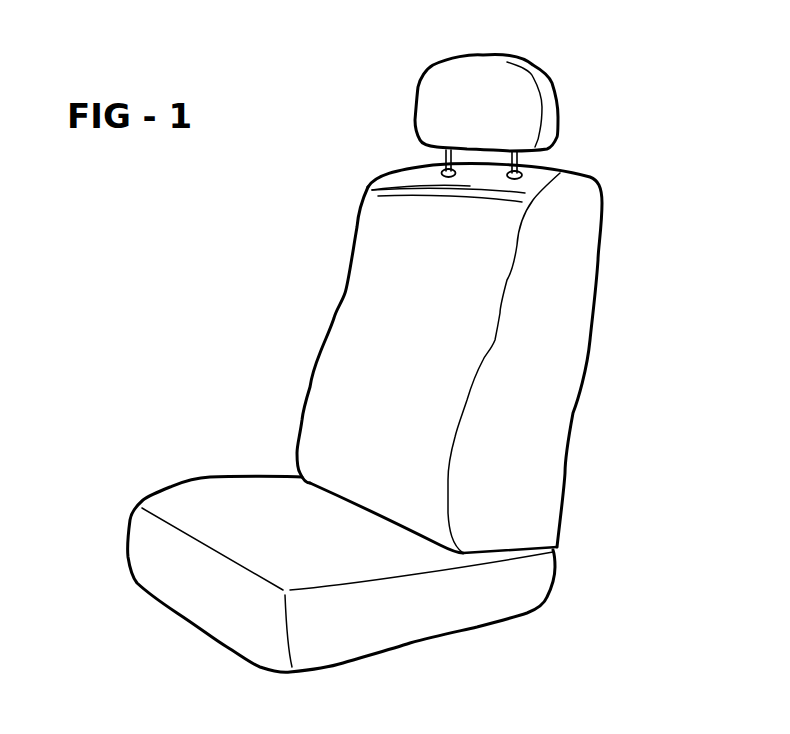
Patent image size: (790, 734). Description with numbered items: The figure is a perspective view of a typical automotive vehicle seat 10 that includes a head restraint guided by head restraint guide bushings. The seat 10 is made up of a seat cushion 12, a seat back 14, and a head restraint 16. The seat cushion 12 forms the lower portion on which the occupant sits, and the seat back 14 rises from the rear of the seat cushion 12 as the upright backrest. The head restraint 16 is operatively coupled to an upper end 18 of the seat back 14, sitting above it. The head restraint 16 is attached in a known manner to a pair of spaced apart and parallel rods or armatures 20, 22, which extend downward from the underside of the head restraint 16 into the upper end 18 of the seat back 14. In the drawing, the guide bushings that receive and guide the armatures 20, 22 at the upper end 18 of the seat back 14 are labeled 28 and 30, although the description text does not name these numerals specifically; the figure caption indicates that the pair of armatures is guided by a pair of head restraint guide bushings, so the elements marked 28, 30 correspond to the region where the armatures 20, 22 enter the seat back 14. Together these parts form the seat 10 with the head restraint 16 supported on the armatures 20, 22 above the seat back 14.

The automotive vehicle seat 10 is at (199, 294).
The seat cushion 12 is at (193, 493).
The seat back 14 is at (563, 372).
The head restraint 16 is at (522, 77).
The upper end 18 is at (553, 177).
The armature 20 is at (443, 157).
The armature 22 is at (548, 177).
The trim cover seam 28 is at (410, 168).
The post guide sleeve 30 is at (527, 177).